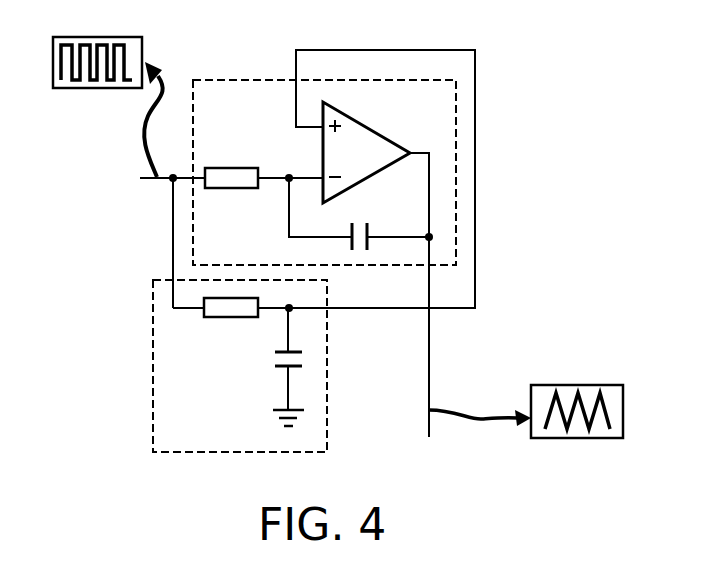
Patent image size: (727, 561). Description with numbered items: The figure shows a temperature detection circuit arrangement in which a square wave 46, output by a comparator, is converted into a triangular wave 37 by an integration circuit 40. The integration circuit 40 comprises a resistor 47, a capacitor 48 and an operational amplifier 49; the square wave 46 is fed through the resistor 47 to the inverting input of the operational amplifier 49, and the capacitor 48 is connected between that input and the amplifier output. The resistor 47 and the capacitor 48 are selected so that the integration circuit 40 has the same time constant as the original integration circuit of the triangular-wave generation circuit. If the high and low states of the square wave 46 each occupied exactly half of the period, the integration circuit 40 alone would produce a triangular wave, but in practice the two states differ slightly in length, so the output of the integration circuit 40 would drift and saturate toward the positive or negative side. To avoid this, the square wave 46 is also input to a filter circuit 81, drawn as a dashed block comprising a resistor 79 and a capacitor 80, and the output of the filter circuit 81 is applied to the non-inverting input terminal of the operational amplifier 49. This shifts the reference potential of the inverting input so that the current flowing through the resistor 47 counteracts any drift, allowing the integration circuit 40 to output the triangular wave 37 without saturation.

The integration circuit 40 is at (240, 78).
The square wave 46 is at (73, 90).
The resistor 47 is at (233, 167).
The capacitor 48 is at (368, 224).
The operational amplifier 49 is at (382, 132).
The resistor 79 is at (218, 318).
The capacitor 80 is at (278, 373).
The filter circuit 81 is at (152, 327).
The triangular wave 37 is at (597, 384).